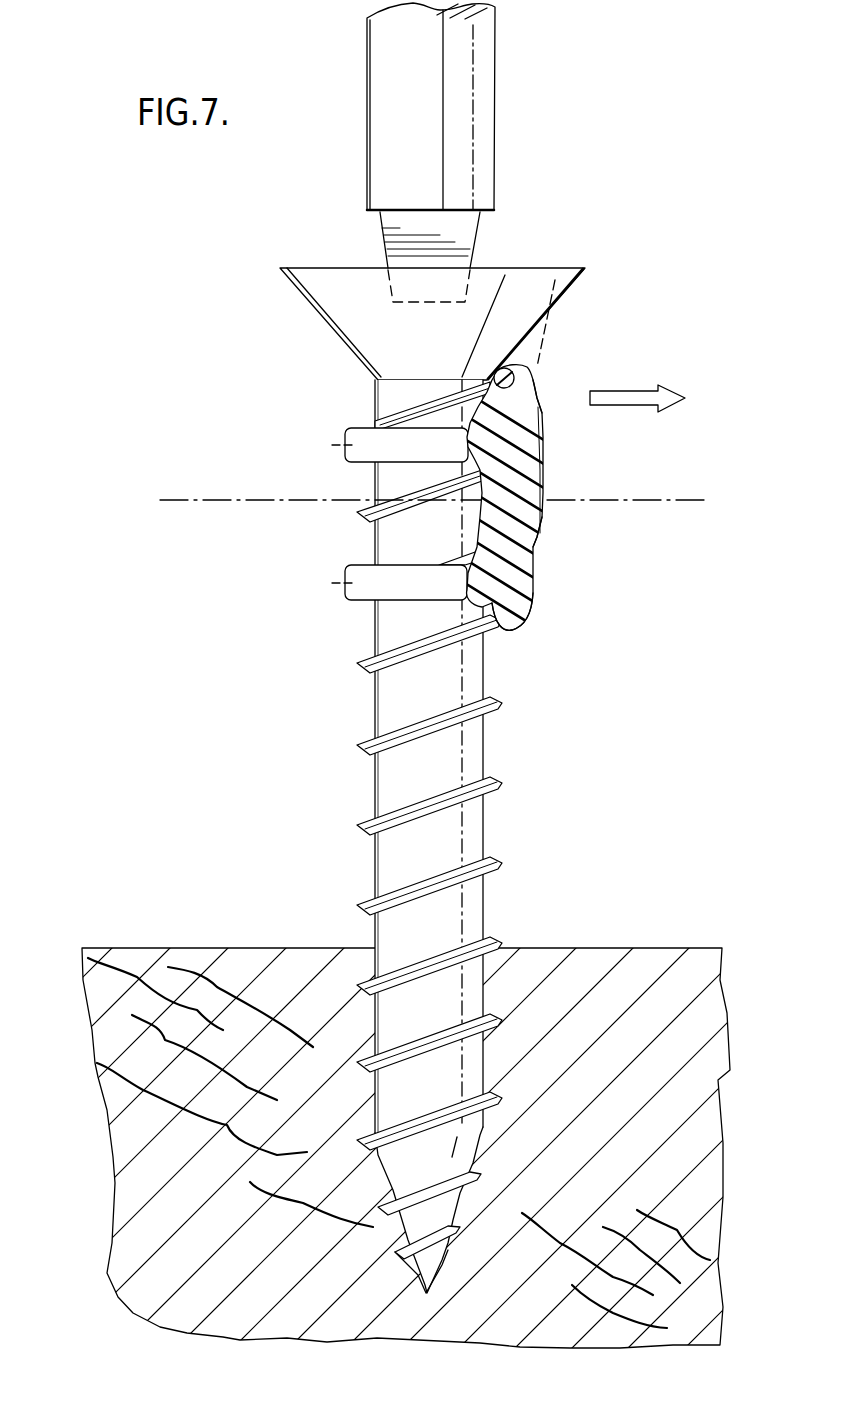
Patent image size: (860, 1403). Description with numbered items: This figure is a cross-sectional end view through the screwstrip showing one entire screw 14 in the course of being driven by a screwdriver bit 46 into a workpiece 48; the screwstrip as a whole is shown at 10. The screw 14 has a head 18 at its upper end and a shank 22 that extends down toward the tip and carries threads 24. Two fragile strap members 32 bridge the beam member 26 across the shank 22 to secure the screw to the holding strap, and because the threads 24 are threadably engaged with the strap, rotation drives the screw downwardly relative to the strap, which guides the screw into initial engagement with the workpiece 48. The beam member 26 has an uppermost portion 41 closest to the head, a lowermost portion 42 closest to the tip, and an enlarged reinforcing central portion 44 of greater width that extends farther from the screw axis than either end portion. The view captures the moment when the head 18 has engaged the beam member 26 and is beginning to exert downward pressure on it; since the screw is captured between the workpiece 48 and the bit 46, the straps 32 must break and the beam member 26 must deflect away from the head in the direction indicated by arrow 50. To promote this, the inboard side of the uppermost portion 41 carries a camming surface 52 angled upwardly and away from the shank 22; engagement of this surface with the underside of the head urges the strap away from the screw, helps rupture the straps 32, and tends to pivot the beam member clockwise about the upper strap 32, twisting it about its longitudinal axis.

The screw assembly 10 is at (260, 351).
The screw 14 is at (343, 748).
The head of the screw 18 is at (550, 282).
The shank 22 is at (490, 737).
The threads 24 is at (492, 793).
The beam member 26 is at (535, 518).
The strap members 32 is at (343, 447).
The uppermost portion 41 is at (537, 385).
The lowermost portion 42 is at (520, 590).
The central portion 44 is at (527, 465).
The screwdriver bit 46 is at (483, 92).
The workpiece 48 is at (654, 1153).
The arrow 50 is at (602, 407).
The camming surface 52 is at (528, 367).